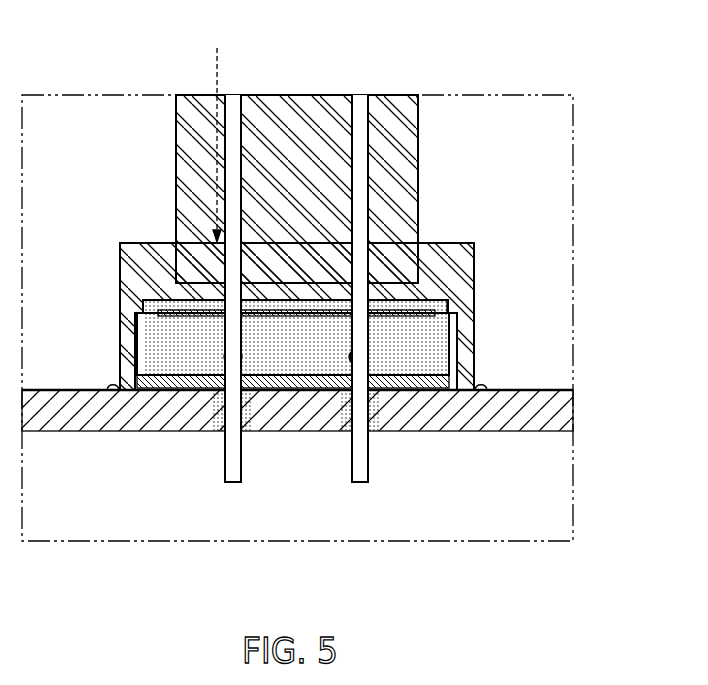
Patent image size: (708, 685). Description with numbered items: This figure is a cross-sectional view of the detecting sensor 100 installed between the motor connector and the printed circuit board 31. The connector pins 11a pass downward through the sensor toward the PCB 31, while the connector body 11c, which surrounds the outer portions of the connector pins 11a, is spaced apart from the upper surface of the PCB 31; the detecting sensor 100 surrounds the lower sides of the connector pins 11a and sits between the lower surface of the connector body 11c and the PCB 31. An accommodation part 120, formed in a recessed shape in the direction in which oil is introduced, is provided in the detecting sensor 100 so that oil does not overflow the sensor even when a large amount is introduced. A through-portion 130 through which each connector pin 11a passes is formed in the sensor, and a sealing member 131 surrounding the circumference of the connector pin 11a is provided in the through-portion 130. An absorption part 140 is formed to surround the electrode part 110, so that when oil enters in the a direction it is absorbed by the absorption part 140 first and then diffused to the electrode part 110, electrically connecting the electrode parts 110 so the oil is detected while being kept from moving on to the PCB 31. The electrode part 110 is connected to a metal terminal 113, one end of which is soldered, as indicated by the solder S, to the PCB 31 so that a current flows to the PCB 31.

The connector pin 11a is at (362, 143).
The connector body 11c is at (397, 188).
The accommodation part 120 is at (460, 262).
The electrode part 110 is at (453, 310).
The detecting sensor 100 is at (477, 340).
The metal terminal 113 is at (140, 357).
The absorption part 140 is at (453, 363).
The through-portion 130 is at (400, 381).
The sealing member 131 is at (345, 362).
The printed circuit board 31 is at (563, 410).
The solder S is at (110, 390).
The oil introduction direction a is at (215, 132).